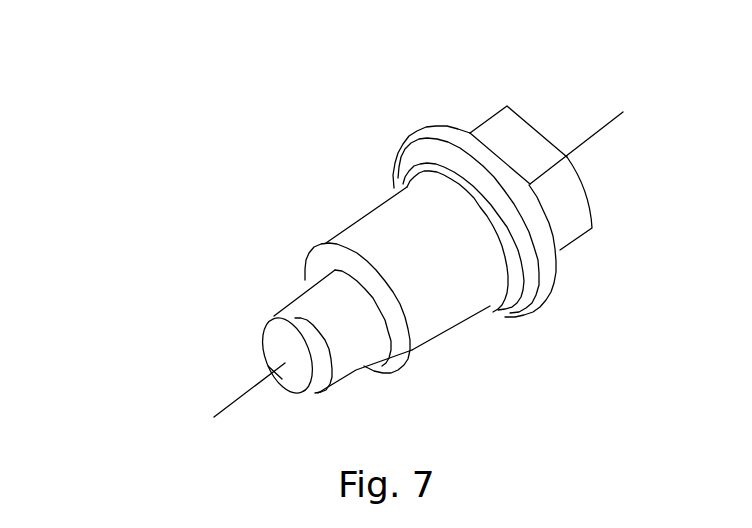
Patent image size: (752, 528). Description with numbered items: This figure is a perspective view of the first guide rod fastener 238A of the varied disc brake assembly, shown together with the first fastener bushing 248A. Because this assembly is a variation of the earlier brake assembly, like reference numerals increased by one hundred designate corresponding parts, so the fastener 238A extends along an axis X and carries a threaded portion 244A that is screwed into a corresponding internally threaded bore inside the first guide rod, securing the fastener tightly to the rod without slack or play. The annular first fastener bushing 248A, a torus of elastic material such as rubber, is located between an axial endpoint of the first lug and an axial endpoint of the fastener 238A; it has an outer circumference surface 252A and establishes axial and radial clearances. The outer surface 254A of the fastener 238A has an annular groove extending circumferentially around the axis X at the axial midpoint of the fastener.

The first guide rod fastener 238A is at (443, 126).
The threaded portion 244A is at (336, 343).
The first fastener bushing 248A is at (420, 164).
The outer circumference surface 252A is at (519, 280).
The outer surface 254A is at (430, 296).
The axis X is at (600, 127).